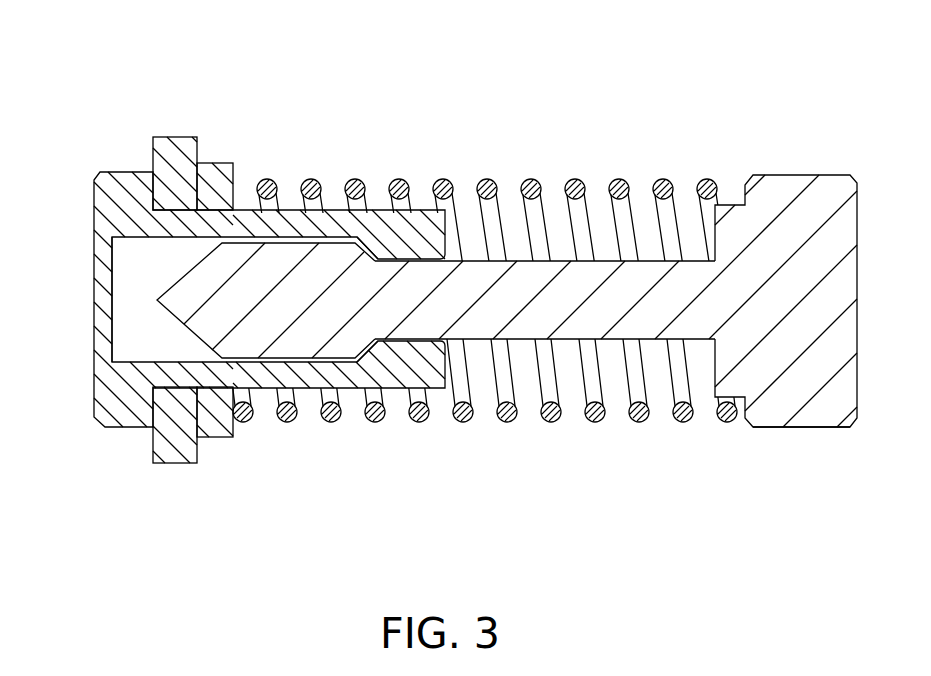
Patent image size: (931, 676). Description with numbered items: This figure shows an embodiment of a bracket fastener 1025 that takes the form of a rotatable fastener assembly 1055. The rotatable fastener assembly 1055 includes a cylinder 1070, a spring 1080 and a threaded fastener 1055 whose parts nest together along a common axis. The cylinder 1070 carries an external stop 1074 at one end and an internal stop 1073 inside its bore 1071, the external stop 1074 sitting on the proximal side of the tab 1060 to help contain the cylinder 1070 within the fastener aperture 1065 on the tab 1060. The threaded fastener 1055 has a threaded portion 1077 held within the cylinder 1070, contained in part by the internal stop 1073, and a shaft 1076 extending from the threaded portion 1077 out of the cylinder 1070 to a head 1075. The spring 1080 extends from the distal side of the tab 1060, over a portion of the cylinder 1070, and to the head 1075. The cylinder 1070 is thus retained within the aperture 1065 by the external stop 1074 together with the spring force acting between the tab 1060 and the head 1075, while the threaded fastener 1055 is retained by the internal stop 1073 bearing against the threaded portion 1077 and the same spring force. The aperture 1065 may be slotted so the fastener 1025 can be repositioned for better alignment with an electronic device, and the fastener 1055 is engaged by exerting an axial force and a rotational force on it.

The fastener 1025 is at (348, 80).
The rotatable fastener assembly 1055 is at (806, 160).
The tab 1060 is at (173, 137).
The fastener aperture 1065 is at (153, 442).
The cylinder 1070 is at (254, 387).
The chamber 1071 is at (118, 302).
The internal stop 1073 is at (366, 252).
The external stop 1074 is at (121, 172).
The head 1075 is at (805, 428).
The shaft 1076 is at (528, 280).
The threaded portion 1077 is at (263, 275).
The spring 1080 is at (584, 187).